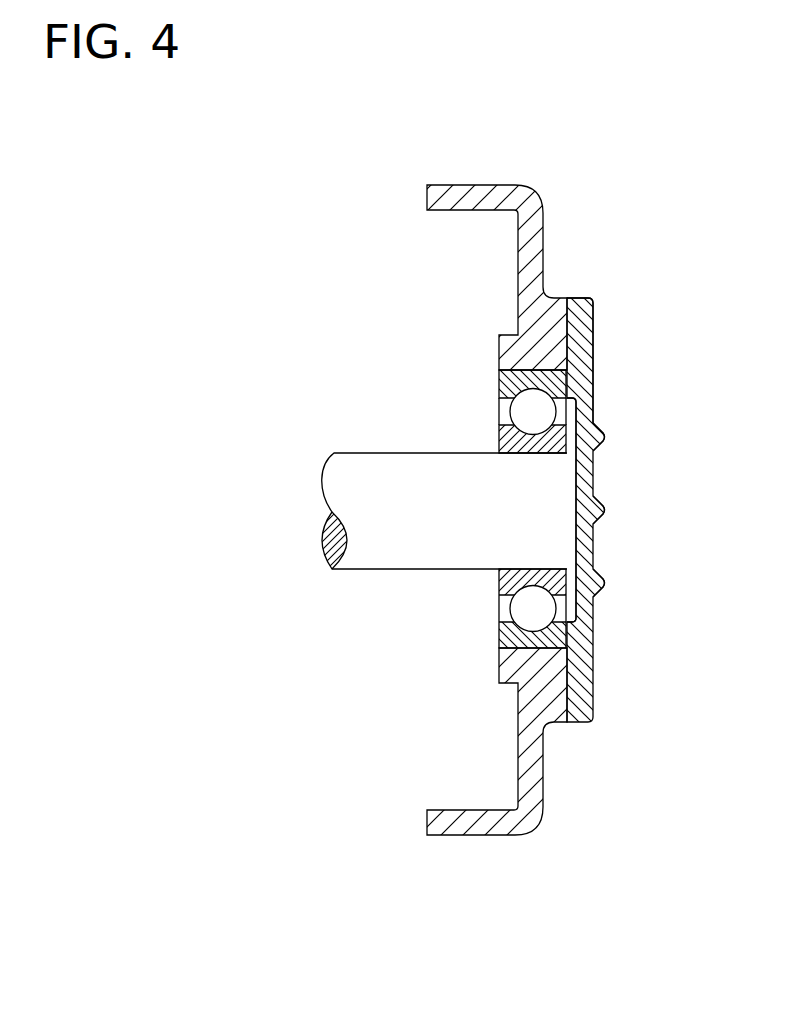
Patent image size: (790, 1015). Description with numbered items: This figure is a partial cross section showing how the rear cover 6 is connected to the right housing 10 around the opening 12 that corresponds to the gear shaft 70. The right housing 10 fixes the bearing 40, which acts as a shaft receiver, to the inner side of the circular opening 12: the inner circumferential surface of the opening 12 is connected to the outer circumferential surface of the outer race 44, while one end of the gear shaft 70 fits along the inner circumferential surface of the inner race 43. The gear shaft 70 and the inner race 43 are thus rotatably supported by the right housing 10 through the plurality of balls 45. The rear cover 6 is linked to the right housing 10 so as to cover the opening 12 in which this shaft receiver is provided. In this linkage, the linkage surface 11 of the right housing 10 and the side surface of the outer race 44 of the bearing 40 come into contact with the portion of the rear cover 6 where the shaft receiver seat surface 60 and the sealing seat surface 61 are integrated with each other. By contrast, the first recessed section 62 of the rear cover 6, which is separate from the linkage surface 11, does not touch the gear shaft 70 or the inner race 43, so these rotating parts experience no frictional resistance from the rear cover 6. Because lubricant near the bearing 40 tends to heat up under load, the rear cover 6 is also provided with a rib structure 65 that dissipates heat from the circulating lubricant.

The rear cover 6 is at (582, 320).
The right housing 10 is at (480, 510).
The linkage surface 11 is at (583, 300).
The opening 12 is at (508, 640).
The bearing 40 is at (461, 490).
The inner race 43 is at (499, 441).
The outer race 44 is at (499, 383).
The balls 45 is at (520, 410).
The shaft receiver seat surface 60 is at (634, 510).
The sealing seat surface 61 is at (568, 680).
The first recessed section 62 is at (572, 448).
The rib structure 65 is at (604, 437).
The gear shaft 70 is at (348, 487).